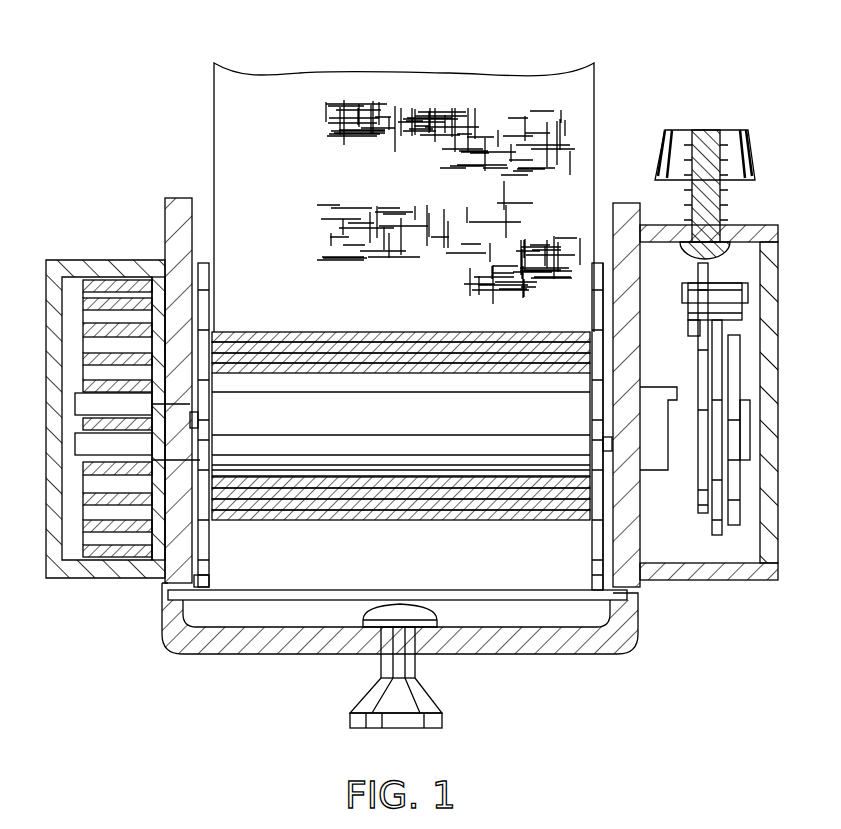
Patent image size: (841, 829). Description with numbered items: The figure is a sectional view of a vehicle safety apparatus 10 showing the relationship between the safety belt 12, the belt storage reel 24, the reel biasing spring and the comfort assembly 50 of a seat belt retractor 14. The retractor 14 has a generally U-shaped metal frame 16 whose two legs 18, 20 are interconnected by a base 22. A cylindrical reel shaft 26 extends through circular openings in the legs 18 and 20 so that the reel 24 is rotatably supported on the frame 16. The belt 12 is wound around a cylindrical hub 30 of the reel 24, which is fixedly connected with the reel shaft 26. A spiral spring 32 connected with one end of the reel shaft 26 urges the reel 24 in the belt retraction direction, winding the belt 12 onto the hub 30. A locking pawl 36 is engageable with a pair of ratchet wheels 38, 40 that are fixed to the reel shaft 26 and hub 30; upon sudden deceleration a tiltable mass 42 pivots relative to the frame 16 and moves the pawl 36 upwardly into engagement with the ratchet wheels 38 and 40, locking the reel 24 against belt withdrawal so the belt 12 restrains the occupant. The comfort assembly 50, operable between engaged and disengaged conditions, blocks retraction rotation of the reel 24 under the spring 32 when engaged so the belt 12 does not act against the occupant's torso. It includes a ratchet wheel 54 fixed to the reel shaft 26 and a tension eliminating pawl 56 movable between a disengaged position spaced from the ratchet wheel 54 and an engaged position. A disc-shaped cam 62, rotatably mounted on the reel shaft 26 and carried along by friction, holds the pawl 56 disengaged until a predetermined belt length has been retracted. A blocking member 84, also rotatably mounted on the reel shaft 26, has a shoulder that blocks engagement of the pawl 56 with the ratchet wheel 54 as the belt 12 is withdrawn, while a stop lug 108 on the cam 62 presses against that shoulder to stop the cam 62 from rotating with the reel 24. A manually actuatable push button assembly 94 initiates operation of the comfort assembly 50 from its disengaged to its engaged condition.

The vehicle safety apparatus 10 is at (100, 118).
The safety belt 12 is at (395, 95).
The seat belt retractor 14 is at (204, 702).
The frame 16 is at (162, 651).
The leg 18 is at (181, 198).
The leg 20 is at (620, 203).
The base 22 is at (494, 645).
The belt storage reel 24 is at (305, 372).
The reel shaft 26 is at (192, 420).
The hub 30 is at (415, 426).
The spiral spring 32 is at (100, 330).
The locking pawl 36 is at (345, 592).
The ratchet wheel 38 is at (210, 562).
The ratchet wheel 40 is at (598, 560).
The tiltable mass 42 is at (378, 700).
The comfort assembly 50 is at (742, 94).
The ratchet wheel 54 is at (735, 508).
The tension eliminating pawl 56 is at (730, 303).
The cam 62 is at (718, 536).
The blocking member 84 is at (700, 500).
The push button assembly 94 is at (762, 143).
The stop lug 108 is at (690, 322).